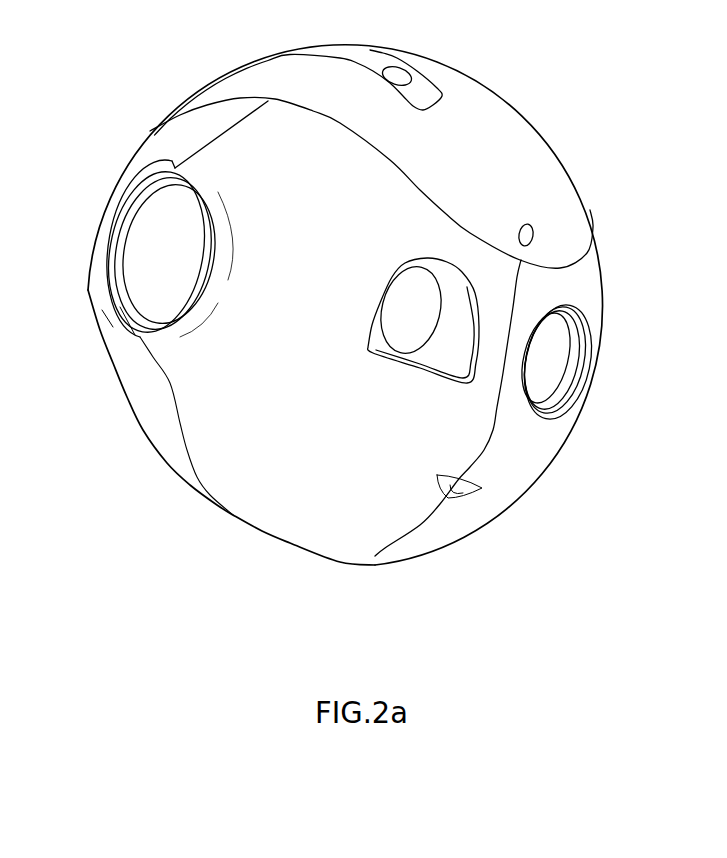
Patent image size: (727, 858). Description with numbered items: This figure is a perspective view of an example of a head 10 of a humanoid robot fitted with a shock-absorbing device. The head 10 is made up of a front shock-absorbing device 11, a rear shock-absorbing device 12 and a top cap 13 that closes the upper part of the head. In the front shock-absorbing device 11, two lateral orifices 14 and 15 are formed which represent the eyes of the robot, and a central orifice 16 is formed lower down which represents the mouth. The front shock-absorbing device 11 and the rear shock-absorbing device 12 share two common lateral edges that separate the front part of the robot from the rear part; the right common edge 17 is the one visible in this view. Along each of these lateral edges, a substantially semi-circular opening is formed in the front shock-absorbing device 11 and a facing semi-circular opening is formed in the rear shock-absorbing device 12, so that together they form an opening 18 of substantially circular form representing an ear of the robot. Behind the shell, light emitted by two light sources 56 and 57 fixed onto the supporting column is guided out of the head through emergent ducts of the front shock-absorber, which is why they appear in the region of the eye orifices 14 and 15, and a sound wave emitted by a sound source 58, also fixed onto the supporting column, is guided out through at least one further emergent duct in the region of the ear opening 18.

The head 10 is at (244, 40).
The front shock-absorbing device 11 is at (272, 506).
The rear shock-absorbing device 12 is at (162, 145).
The top cap 13 is at (510, 127).
The lateral orifice 14 is at (393, 273).
The lateral orifice 15 is at (560, 363).
The central orifice 16 is at (457, 482).
The right common edge 17 is at (170, 380).
The opening 18 is at (133, 272).
The light source 56 is at (418, 288).
The light source 57 is at (553, 335).
The sound source 58 is at (140, 217).